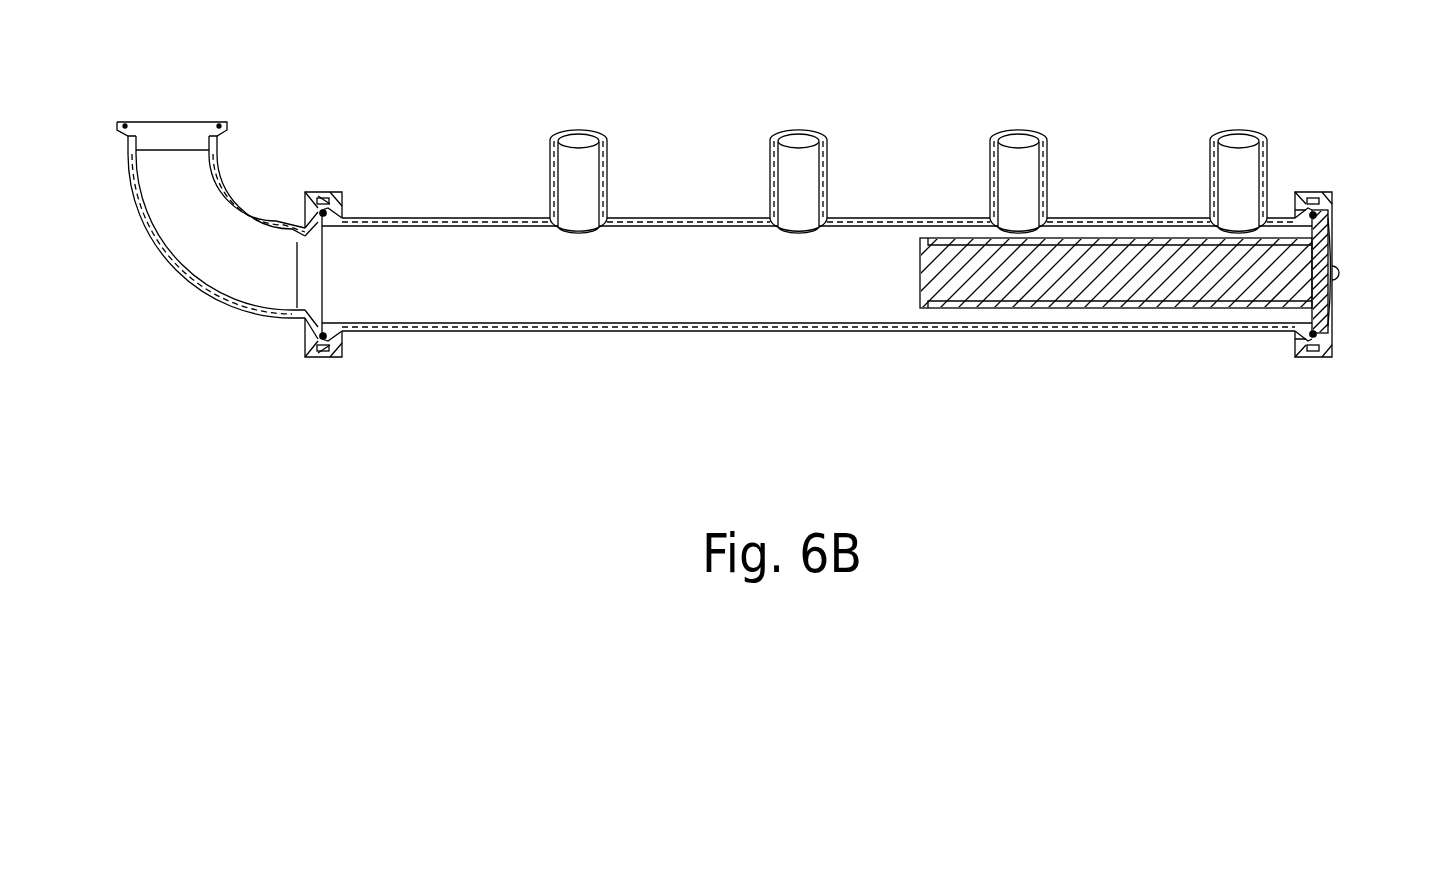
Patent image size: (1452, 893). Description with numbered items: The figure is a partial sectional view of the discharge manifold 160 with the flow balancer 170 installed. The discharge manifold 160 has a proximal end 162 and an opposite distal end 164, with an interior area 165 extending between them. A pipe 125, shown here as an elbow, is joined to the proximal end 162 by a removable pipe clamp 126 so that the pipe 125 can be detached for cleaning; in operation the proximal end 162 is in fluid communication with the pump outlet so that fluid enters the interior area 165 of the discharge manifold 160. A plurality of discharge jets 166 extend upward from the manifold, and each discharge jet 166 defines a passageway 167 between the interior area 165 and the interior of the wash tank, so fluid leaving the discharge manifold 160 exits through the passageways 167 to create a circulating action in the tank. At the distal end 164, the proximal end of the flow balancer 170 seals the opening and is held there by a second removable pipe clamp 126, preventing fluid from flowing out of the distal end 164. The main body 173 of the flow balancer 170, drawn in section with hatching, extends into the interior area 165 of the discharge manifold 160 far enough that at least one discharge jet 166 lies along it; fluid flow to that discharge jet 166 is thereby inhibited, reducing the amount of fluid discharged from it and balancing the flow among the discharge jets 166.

The pipe 125 is at (220, 178).
The removable pipe clamp 126 is at (333, 195).
The discharge manifold 160 is at (1040, 334).
The proximal end 162 is at (318, 349).
The distal end 164 is at (1297, 348).
The interior area 165 is at (380, 282).
The discharge jet 166 is at (605, 192).
The passageway 167 is at (574, 133).
The flow balancer 170 is at (1323, 285).
The main body 173 is at (990, 294).